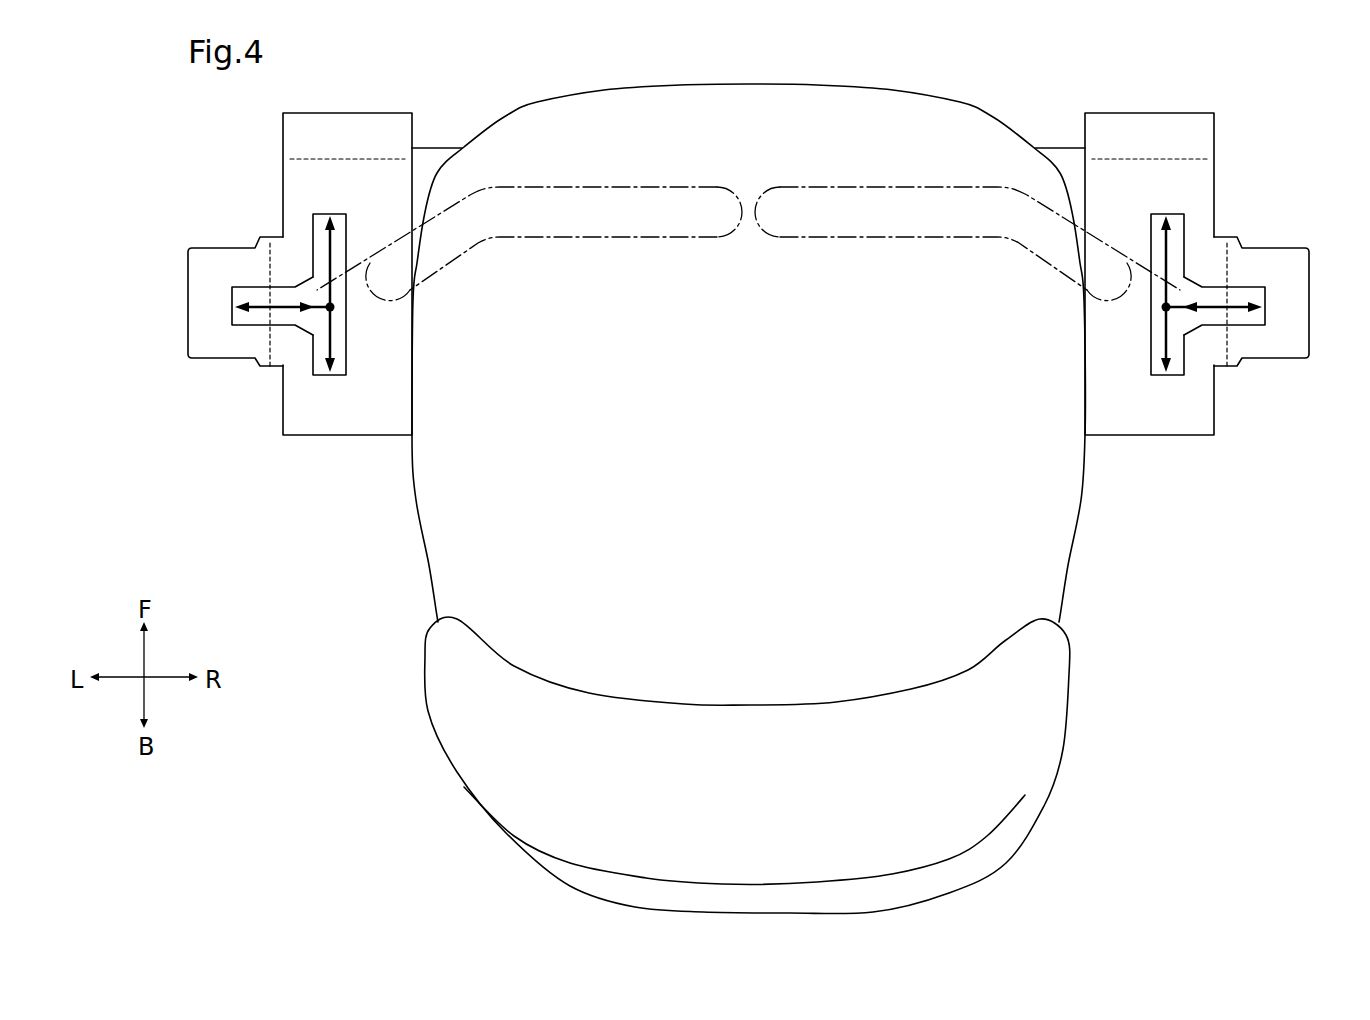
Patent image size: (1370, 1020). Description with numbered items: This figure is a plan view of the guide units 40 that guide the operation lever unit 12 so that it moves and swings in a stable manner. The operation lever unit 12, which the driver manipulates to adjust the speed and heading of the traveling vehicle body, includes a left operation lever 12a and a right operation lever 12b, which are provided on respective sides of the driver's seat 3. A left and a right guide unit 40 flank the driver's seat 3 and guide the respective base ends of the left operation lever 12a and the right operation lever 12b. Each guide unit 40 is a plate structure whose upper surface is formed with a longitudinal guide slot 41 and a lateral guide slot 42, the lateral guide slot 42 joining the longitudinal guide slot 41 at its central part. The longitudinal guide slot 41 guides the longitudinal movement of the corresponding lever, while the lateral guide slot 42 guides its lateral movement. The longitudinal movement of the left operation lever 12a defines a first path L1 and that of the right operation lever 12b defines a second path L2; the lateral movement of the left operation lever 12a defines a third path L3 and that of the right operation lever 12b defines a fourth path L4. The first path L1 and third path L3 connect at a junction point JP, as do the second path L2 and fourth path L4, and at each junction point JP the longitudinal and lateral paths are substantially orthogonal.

The driver's seat 3 is at (980, 850).
The operation lever unit 12 is at (860, 153).
The left operation lever 12a is at (645, 237).
The right operation lever 12b is at (852, 237).
The guide unit 40 is at (253, 162).
The longitudinal guide slot 41 is at (337, 250).
The lateral guide slot 42 is at (258, 297).
The first path L1 is at (340, 253).
The second path L2 is at (1157, 253).
The third path L3 is at (259, 312).
The fourth path L4 is at (1238, 312).
The junction point JP is at (335, 307).